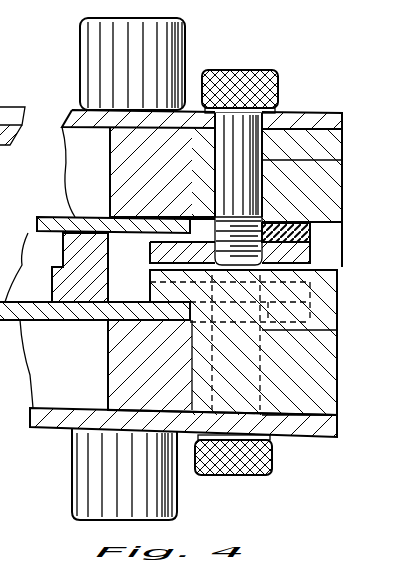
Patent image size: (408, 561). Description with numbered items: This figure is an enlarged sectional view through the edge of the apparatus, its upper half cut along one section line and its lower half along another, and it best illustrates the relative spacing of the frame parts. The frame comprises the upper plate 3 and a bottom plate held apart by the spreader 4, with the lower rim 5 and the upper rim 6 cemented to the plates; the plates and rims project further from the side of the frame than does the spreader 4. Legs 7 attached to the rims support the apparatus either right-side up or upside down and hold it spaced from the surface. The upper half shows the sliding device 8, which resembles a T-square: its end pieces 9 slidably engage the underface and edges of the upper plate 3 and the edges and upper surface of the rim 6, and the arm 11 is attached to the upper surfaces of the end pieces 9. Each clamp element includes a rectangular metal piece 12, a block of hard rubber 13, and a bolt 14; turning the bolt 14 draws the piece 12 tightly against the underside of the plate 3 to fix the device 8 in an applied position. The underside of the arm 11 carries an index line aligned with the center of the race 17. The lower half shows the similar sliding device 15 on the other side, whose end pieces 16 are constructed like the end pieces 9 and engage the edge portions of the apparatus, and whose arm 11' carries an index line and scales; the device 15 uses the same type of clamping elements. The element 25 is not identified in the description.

The upper plate 3 is at (45, 229).
The spreader 4 is at (80, 246).
The lower rim 5 is at (118, 347).
The upper rim 6 is at (118, 157).
The legs 7 is at (183, 42).
The sliding device 8 is at (342, 175).
The end pieces 9 is at (342, 146).
The arm 11 is at (178, 104).
The arm of sliding device 15 11' is at (183, 429).
The rectangular metal piece 12 is at (300, 256).
The block of hard rubber 13 is at (310, 236).
The bolt 14 is at (278, 93).
The sliding device 15 is at (339, 357).
The end pieces 16 is at (325, 374).
The race 17 is at (3, 104).
The fragment 25 is at (1, 141).